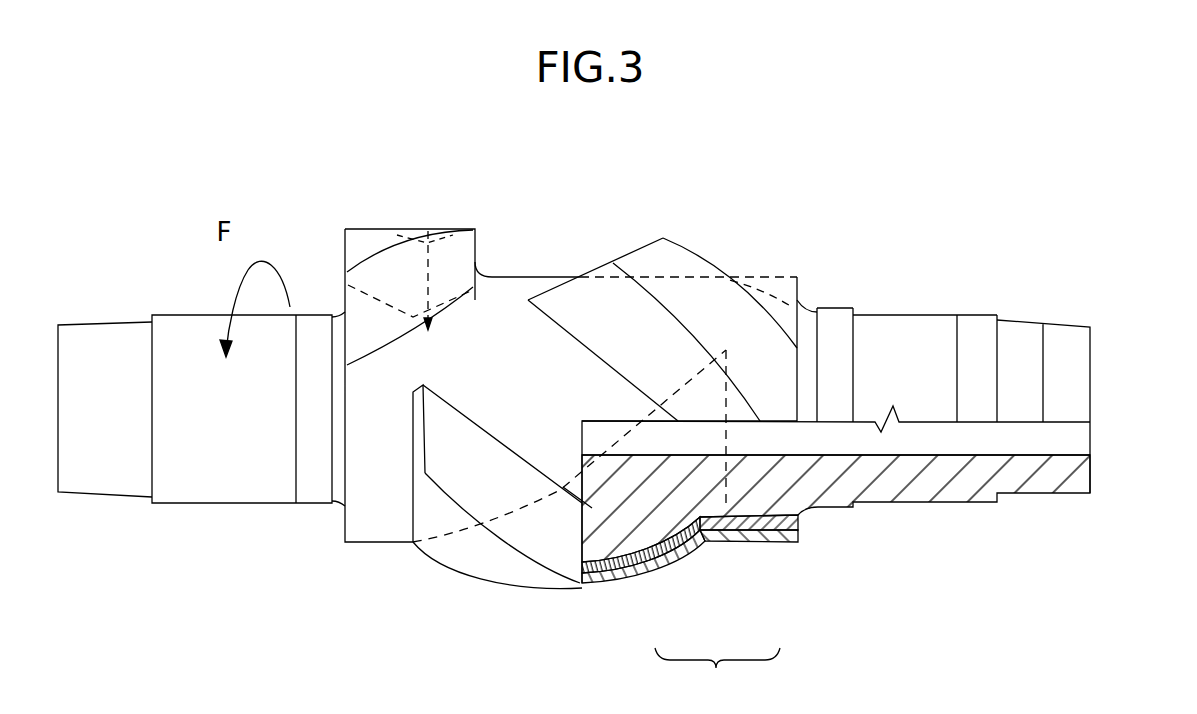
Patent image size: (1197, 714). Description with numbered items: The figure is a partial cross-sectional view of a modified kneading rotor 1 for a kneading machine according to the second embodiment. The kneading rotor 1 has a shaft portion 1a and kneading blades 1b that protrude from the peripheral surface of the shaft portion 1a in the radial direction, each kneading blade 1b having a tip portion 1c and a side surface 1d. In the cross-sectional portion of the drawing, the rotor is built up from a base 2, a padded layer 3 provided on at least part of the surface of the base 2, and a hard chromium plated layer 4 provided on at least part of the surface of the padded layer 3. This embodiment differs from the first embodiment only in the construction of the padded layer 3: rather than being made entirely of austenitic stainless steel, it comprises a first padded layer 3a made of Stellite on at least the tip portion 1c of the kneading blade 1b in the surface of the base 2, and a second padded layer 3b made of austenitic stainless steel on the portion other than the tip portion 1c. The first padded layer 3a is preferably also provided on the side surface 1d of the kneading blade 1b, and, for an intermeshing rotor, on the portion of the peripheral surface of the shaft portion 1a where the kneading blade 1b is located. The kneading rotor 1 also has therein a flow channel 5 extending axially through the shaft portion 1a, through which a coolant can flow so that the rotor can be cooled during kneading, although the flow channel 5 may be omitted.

The kneading rotor 1 is at (1083, 266).
The shaft portion 1a is at (232, 505).
The kneading blade 1b is at (477, 240).
The tip portion 1c is at (362, 242).
The side surface 1d is at (345, 250).
The base 2 is at (1093, 470).
The padded layer 3 is at (717, 674).
The first padded layer 3a is at (660, 580).
The second padded layer 3b is at (766, 545).
The hard chromium plated layer 4 is at (800, 533).
The flow channel 5 is at (1078, 435).